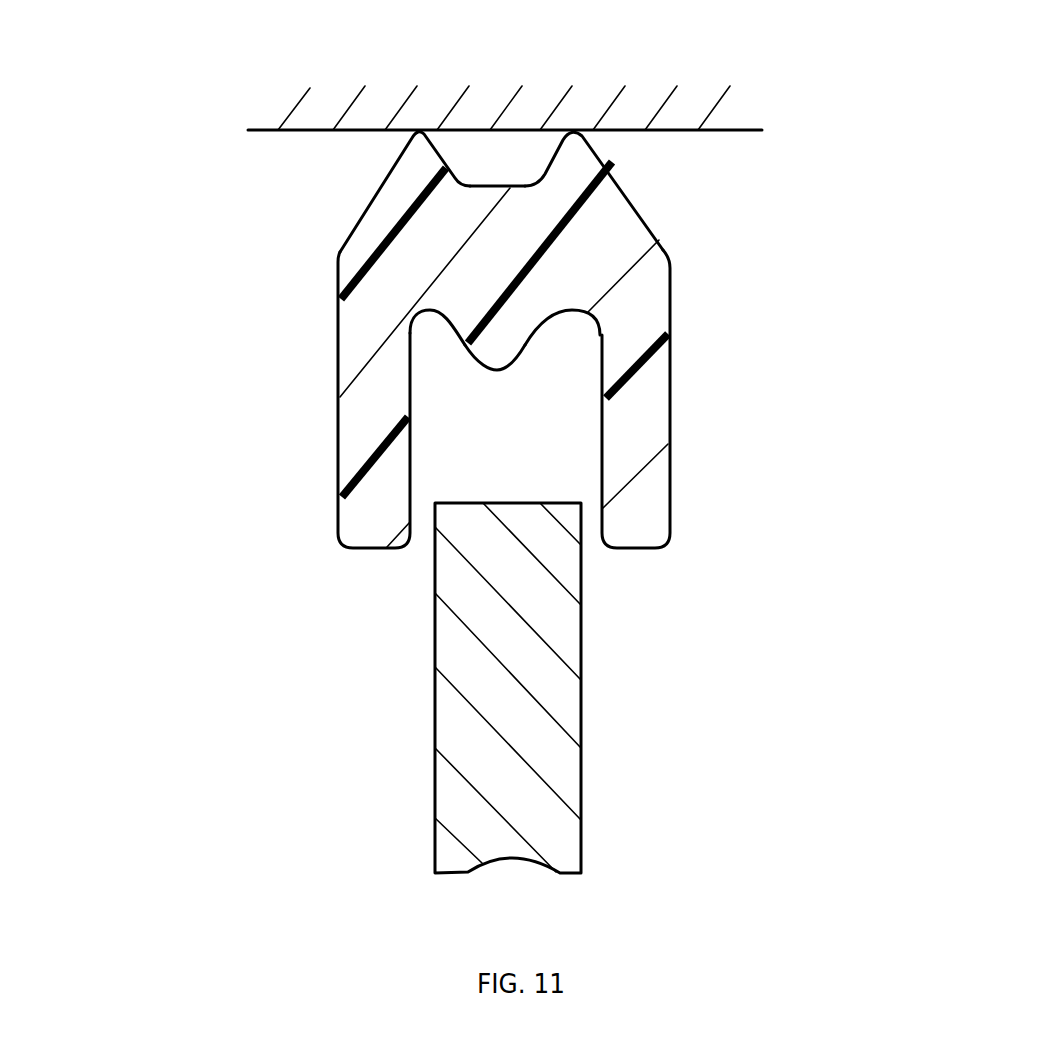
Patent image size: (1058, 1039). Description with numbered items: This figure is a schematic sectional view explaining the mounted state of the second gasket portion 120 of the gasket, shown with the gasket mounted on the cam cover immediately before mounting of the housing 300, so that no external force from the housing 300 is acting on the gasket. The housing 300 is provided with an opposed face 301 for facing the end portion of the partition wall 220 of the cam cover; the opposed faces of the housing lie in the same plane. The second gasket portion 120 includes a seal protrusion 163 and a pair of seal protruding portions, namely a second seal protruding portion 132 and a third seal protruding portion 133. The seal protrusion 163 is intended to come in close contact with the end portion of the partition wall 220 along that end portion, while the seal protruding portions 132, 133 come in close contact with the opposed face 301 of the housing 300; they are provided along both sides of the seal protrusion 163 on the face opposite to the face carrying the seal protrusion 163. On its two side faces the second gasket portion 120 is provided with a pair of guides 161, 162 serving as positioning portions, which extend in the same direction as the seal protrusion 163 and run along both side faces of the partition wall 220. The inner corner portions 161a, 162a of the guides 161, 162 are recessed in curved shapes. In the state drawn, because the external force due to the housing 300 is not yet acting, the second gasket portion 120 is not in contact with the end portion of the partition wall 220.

The second gasket portion 120 is at (760, 303).
The second seal protruding portion 132 is at (417, 130).
The third seal protruding portion 133 is at (583, 130).
The guide 161 is at (353, 457).
The inner corner portion 161a is at (430, 314).
The guide 162 is at (672, 447).
The inner corner portion 162a is at (573, 313).
The seal protrusion 163 is at (502, 366).
The partition wall 220 is at (553, 762).
The housing 300 is at (307, 121).
The opposed face 301 is at (735, 131).